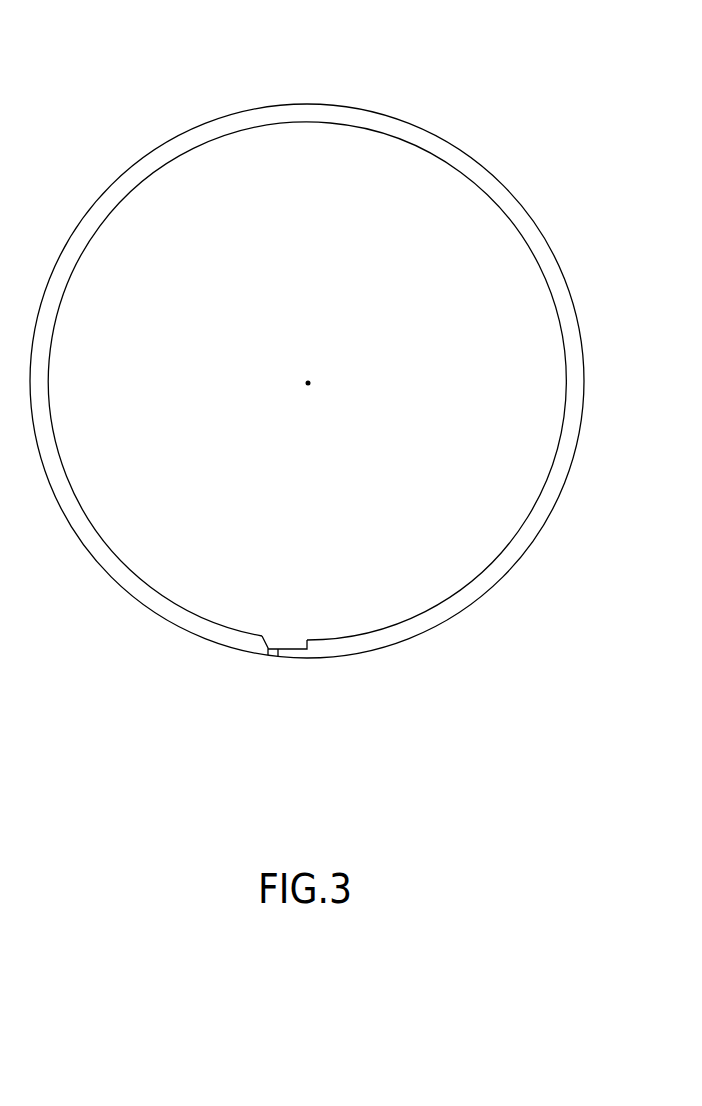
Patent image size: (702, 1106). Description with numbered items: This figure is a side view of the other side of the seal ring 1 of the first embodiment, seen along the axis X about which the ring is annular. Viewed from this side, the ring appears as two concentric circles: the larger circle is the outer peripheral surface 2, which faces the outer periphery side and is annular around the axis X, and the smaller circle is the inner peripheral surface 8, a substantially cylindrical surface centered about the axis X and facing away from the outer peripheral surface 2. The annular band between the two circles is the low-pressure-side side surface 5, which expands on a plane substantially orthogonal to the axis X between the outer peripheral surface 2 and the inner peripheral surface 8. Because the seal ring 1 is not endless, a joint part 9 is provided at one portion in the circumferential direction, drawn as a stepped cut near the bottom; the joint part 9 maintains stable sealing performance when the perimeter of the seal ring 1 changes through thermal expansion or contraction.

The seal ring 1 is at (388, 94).
The outer peripheral surface 2 is at (453, 144).
The low-pressure-side side surface 5 is at (500, 195).
The inner peripheral surface 8 is at (565, 398).
The joint part 9 is at (290, 658).
The axis X is at (311, 384).